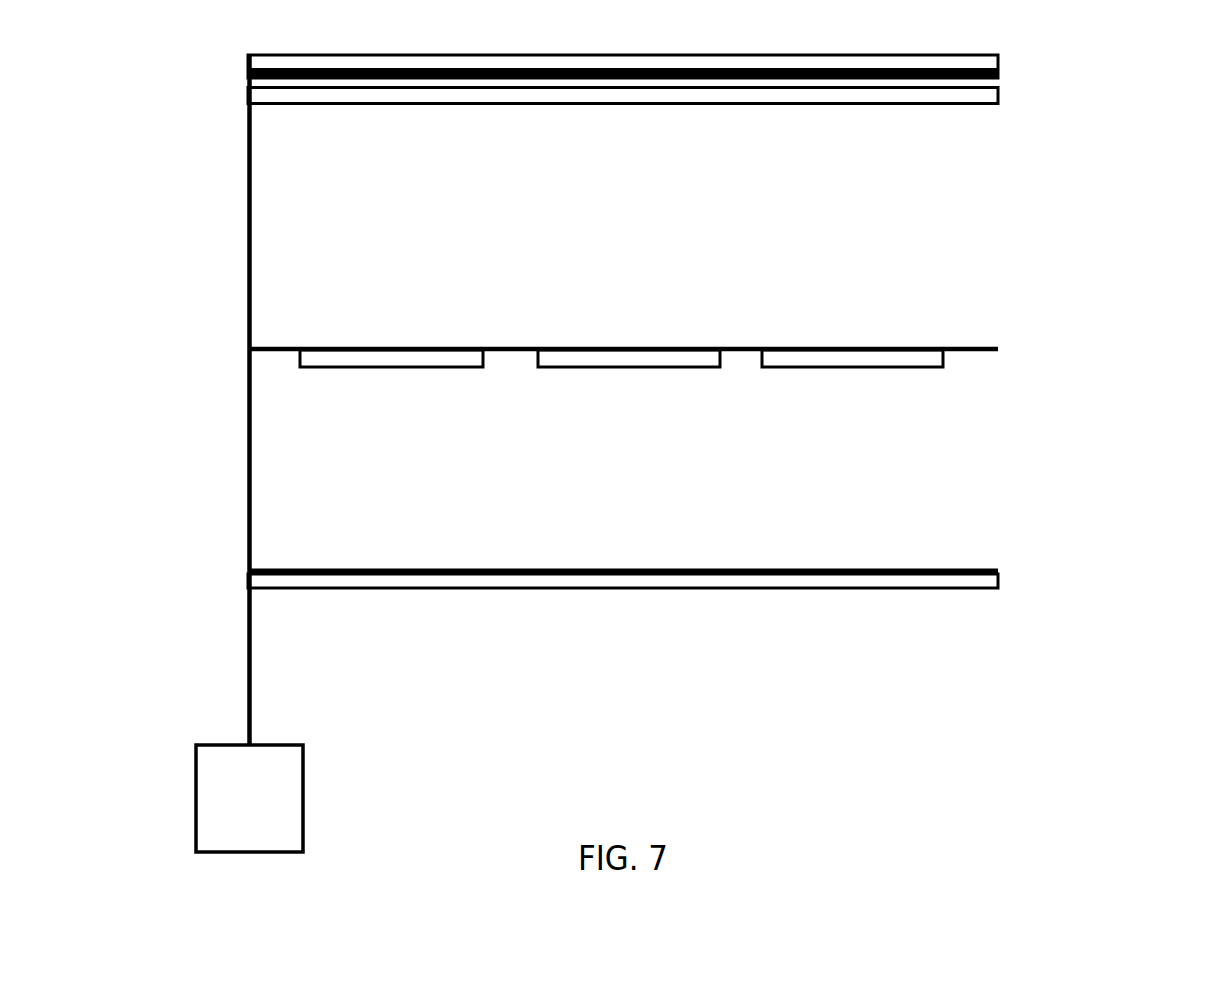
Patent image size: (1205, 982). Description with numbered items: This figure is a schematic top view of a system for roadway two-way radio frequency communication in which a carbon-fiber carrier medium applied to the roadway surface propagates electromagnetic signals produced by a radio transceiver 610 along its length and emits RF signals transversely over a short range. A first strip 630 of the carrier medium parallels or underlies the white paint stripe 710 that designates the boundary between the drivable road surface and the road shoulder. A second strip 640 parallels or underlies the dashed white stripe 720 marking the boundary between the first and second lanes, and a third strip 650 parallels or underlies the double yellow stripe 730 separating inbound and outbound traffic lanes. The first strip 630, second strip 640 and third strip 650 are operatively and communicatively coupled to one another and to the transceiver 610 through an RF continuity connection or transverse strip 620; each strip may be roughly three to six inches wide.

The radio transceiver 610 is at (278, 838).
The transverse strip 620 is at (247, 426).
The first strip of the carrier medium 630 is at (998, 571).
The second strip of the carrier medium 640 is at (998, 350).
The third strip of the carrier medium 650 is at (247, 73).
The white paint stripe 710 is at (998, 578).
The dashed white stripe 720 is at (943, 358).
The double yellow stripe 730 is at (998, 63).